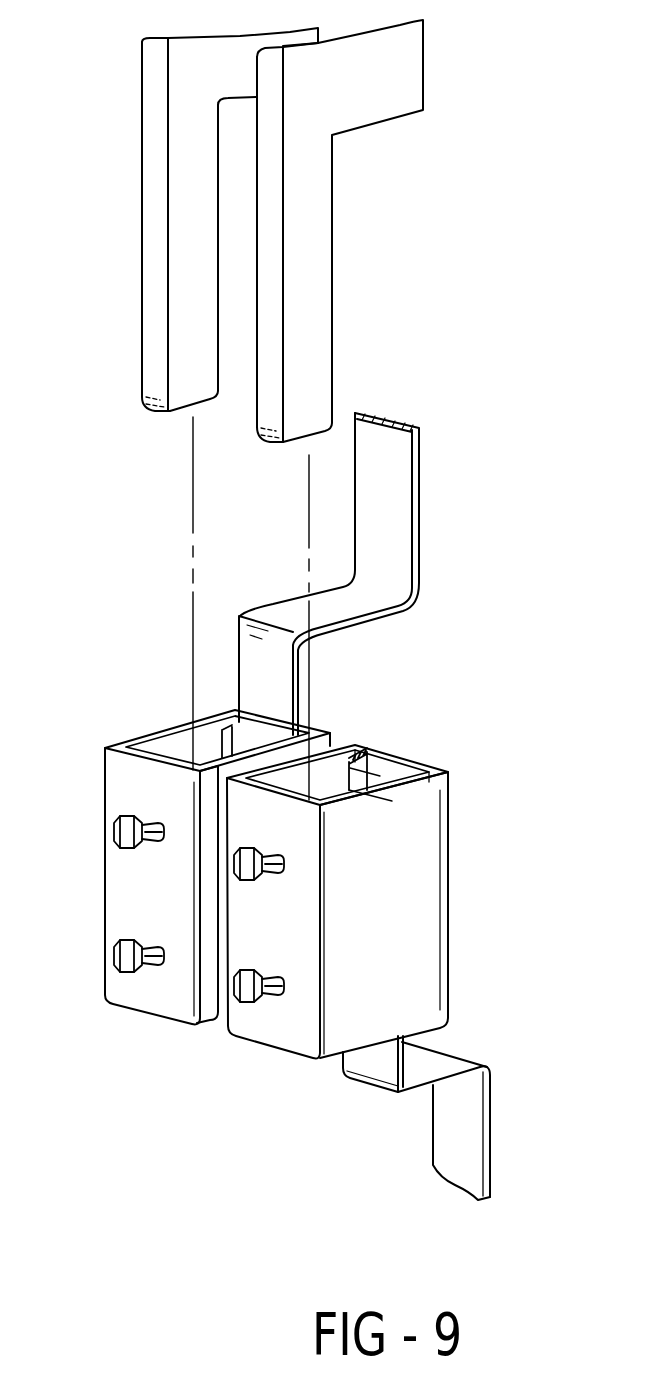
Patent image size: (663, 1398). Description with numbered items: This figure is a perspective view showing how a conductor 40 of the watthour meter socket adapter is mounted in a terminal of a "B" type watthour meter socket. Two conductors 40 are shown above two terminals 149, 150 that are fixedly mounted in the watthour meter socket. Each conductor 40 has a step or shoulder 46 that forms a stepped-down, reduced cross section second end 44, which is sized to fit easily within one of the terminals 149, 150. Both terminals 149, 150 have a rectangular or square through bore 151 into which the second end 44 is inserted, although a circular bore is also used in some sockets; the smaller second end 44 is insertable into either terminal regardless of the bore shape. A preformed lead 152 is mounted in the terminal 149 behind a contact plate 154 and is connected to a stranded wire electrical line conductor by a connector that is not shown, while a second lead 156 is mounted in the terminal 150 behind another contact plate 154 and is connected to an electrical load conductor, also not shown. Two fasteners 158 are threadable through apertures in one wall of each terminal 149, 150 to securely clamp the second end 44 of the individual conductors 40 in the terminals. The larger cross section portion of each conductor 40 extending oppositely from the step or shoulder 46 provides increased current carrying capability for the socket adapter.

The conductor 40 is at (152, 121).
The second end 44 is at (152, 366).
The step or shoulder 46 is at (237, 100).
The terminal 149 is at (100, 742).
The terminal 150 is at (315, 1068).
The through bore 151 is at (158, 740).
The preformed lead 152 is at (347, 608).
The contact plate 154 is at (263, 733).
The second lead 156 is at (470, 1145).
The fastener 158 is at (118, 945).